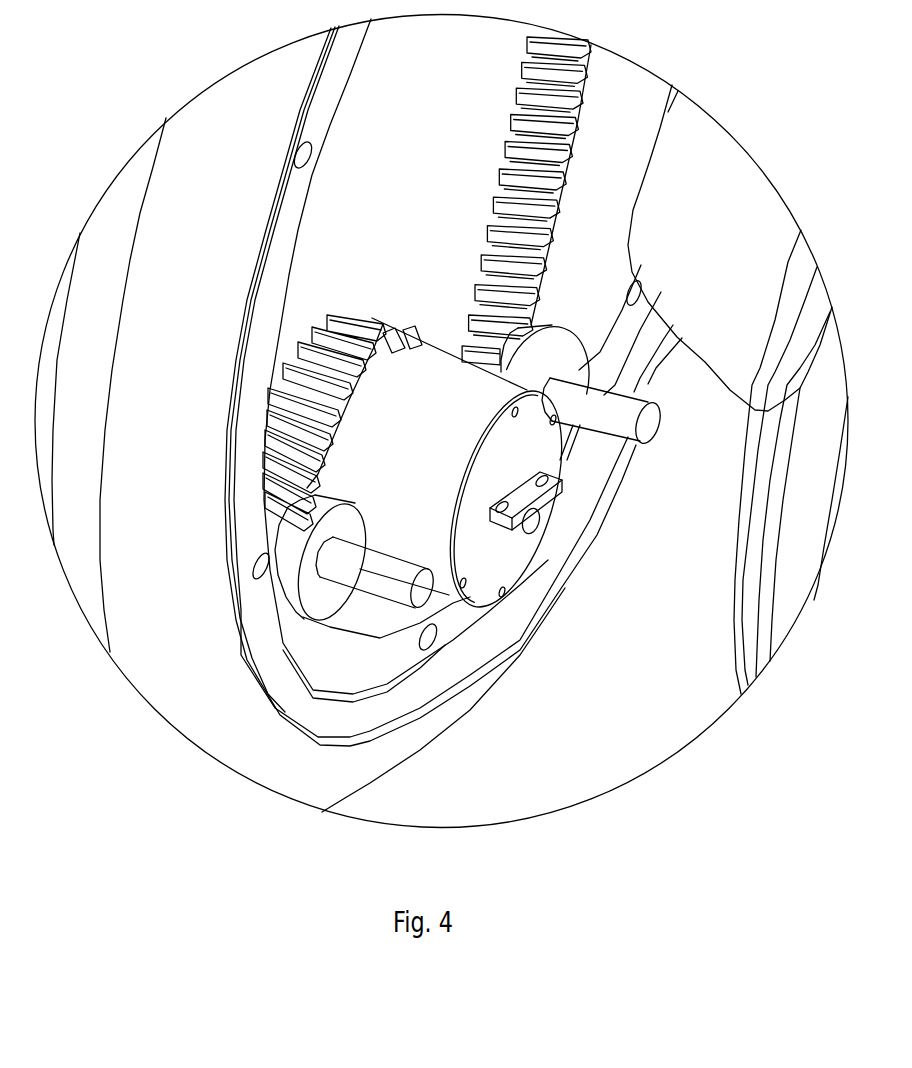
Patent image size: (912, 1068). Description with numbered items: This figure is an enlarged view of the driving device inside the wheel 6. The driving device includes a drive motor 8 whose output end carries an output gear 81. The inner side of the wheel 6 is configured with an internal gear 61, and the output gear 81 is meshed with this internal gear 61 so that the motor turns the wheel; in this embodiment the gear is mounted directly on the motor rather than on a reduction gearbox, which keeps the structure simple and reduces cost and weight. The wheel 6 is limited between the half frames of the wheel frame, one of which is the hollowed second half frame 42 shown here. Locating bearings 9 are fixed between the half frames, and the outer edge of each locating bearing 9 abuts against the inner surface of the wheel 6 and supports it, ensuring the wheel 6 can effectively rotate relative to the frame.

The wheel 6 is at (190, 677).
The internal gear 61 is at (514, 243).
The output gear 81 is at (340, 333).
The drive motor 8 is at (437, 468).
The locating bearing 9 is at (548, 350).
The second half frame 42 is at (771, 585).